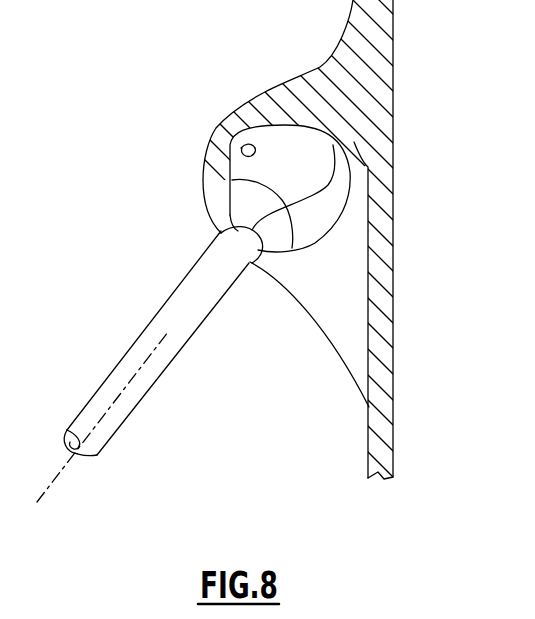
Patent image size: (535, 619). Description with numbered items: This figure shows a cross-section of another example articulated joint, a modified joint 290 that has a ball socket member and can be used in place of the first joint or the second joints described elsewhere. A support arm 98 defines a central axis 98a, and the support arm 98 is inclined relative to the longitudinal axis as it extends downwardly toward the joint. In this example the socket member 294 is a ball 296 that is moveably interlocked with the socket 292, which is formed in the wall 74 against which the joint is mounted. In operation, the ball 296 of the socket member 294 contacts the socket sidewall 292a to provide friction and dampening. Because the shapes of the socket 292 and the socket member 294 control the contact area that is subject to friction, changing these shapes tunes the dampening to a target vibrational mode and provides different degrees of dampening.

The wall 74 is at (394, 100).
The support arm 98 is at (108, 392).
The central axis 98a is at (58, 473).
The modified joint 290 is at (172, 198).
The socket 292 is at (353, 155).
The socket sidewall 292a is at (241, 148).
The socket member 294 is at (340, 213).
The ball 296 is at (312, 226).